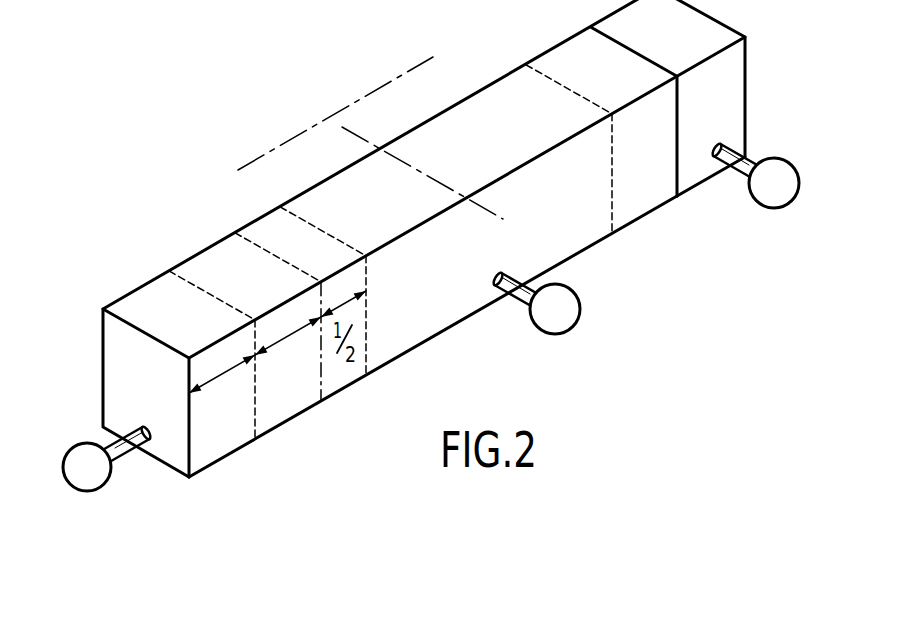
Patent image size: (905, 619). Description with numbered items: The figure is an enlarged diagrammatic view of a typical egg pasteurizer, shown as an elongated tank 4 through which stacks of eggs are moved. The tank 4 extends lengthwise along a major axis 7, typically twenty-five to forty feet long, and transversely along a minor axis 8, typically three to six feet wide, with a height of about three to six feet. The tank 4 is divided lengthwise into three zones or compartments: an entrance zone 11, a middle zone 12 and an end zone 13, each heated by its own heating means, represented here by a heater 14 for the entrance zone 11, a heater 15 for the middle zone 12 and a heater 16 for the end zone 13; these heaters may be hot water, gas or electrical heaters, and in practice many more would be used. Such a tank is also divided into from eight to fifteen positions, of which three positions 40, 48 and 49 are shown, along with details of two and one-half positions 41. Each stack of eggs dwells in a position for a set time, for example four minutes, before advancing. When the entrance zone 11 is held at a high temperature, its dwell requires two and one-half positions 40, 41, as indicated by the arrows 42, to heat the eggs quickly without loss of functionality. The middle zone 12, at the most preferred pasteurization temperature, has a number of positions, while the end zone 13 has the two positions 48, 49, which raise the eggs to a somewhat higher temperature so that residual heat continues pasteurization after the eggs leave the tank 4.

The pasteurizer tank 4 is at (162, 476).
The major axis 7 is at (360, 98).
The minor axis 8 is at (432, 178).
The entrance zone 11 is at (232, 438).
The middle zone 12 is at (563, 245).
The end zone 13 is at (657, 192).
The heater 14 is at (81, 456).
The heater 15 is at (577, 303).
The heater 16 is at (768, 197).
The position 40 is at (203, 417).
The positions 41 is at (297, 397).
The arrows 42 is at (228, 372).
The position 48 is at (625, 212).
The position 49 is at (727, 88).